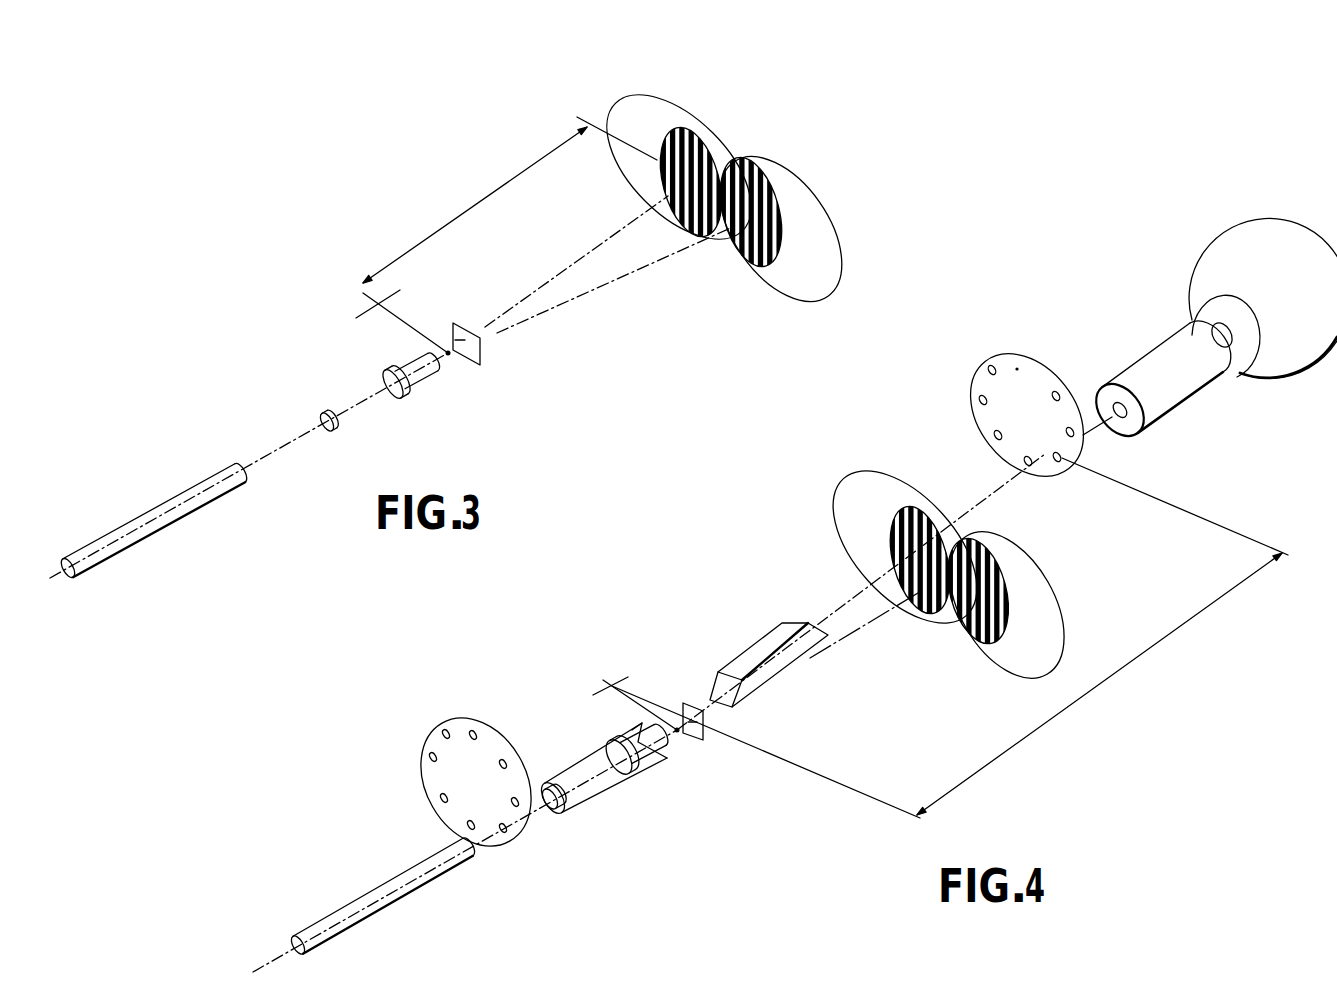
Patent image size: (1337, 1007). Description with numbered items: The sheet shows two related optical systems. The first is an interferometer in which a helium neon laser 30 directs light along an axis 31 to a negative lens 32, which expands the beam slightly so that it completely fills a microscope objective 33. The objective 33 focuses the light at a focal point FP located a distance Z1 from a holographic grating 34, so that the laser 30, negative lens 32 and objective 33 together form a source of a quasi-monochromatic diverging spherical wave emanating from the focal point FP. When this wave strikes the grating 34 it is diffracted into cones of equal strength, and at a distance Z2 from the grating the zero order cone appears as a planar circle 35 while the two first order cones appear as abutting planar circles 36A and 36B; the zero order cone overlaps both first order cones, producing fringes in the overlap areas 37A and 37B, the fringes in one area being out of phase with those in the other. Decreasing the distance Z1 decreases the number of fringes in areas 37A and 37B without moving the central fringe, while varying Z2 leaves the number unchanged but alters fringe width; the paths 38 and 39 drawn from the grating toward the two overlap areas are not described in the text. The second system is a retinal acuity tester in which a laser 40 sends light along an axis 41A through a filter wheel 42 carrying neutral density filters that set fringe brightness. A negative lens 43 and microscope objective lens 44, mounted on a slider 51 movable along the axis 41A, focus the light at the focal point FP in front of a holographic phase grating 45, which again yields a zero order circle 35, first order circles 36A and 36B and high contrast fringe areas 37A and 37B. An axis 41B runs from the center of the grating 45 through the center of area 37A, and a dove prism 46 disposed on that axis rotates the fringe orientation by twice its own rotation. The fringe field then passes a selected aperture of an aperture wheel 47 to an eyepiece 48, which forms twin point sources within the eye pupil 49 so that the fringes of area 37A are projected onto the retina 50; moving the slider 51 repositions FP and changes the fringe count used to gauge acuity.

In FIG. 3, the helium neon laser 30 is at (167, 497).
In FIG. 3, the axis 31 is at (273, 447).
In FIG. 3, the negative lens 32 is at (338, 423).
In FIG. 3, the microscope objective 33 is at (385, 375).
In FIG. 3, the holographic grating 34 is at (482, 350).
In FIG. 3, the planar circle (zero order cone) 35 is at (727, 150).
In FIG. 4, the planar circle (zero order cone) 35 is at (928, 505).
In FIG. 3, the planar circle (first order cone) 36A is at (660, 120).
In FIG. 4, the planar circle (first order cone) 36A is at (857, 480).
In FIG. 3, the planar circle (first order cone) 36B is at (798, 198).
In FIG. 4, the planar circle (first order cone) 36B is at (1015, 552).
In FIG. 3, the overlap area 37A is at (683, 232).
In FIG. 4, the overlap area 37A is at (912, 605).
In FIG. 3, the overlap area 37B is at (737, 257).
In FIG. 4, the overlap area 37B is at (965, 630).
In FIG. 3, the optical path 38 is at (553, 278).
In FIG. 3, the optical path 39 is at (575, 300).
In FIG. 4, the laser 40 is at (368, 897).
In FIG. 4, the axis 41A is at (477, 845).
In FIG. 4, the axis 41B is at (847, 597).
In FIG. 4, the filter wheel 42 is at (432, 775).
In FIG. 4, the negative lens 43 is at (553, 808).
In FIG. 4, the microscope objective lens 44 is at (613, 737).
In FIG. 4, the grating 45 is at (710, 718).
In FIG. 4, the dove prism 46 is at (735, 663).
In FIG. 4, the aperture wheel 47 is at (1028, 370).
In FIG. 4, the eyepiece 48 is at (1167, 345).
In FIG. 4, the eye pupil 49 is at (1230, 325).
In FIG. 4, the retina 50 is at (1300, 237).
In FIG. 4, the slider 51 is at (617, 782).
In FIG. 3, the focal point FP is at (449, 357).
In FIG. 4, the focal point FP is at (678, 734).
In FIG. 3, the distance Z1 is at (367, 300).
In FIG. 4, the distance Z1 is at (605, 672).
In FIG. 3, the distance Z2 is at (481, 203).
In FIG. 4, the distance Z2 is at (1108, 660).